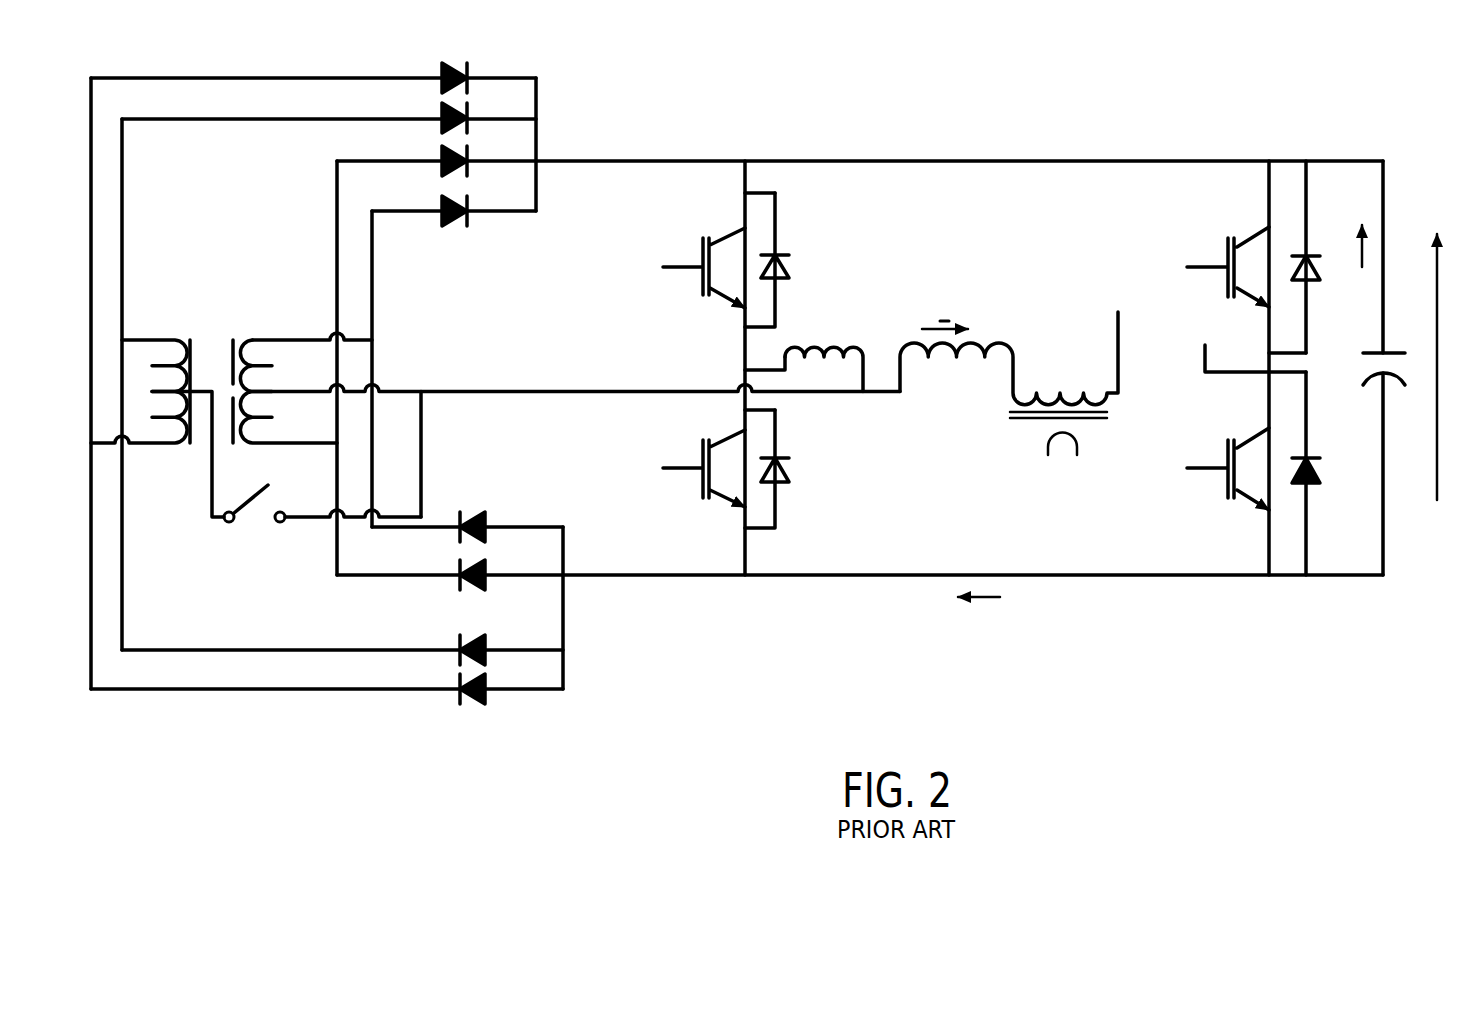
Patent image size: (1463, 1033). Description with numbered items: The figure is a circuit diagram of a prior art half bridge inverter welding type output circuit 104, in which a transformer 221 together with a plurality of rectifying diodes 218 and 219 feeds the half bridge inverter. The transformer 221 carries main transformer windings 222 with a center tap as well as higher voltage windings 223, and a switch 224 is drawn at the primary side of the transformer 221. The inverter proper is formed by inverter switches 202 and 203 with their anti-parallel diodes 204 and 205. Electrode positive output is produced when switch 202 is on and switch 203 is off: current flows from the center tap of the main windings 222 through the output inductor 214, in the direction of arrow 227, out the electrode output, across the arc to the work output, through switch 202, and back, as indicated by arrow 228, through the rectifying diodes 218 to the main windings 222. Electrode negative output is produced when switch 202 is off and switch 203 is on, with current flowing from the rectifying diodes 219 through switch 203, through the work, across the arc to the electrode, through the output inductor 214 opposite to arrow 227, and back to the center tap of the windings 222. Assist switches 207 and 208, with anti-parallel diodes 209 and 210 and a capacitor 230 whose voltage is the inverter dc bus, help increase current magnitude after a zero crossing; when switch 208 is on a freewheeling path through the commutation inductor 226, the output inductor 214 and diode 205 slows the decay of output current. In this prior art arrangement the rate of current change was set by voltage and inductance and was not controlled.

The output circuit 104 is at (787, 670).
The inverter switch 202 is at (1245, 500).
The inverter switch 203 is at (1250, 232).
The anti-parallel diode 204 is at (1320, 470).
The anti-parallel diode 205 is at (1310, 256).
The assist switch 207 is at (718, 515).
The assist switch 208 is at (690, 285).
The anti-parallel diode 209 is at (790, 471).
The anti-parallel diode 210 is at (790, 265).
The output inductor 214 is at (952, 352).
The rectifying diodes 218 is at (593, 648).
The rectifying diodes 219 is at (553, 120).
The transformer 221 is at (212, 320).
The main transformer windings 222 is at (243, 340).
The higher voltage windings 223 is at (147, 373).
The switch 224 is at (255, 513).
The commutation inductor 226 is at (825, 355).
The arrow 227 is at (935, 327).
The arrow 228 is at (977, 597).
The capacitor 230 is at (1365, 357).